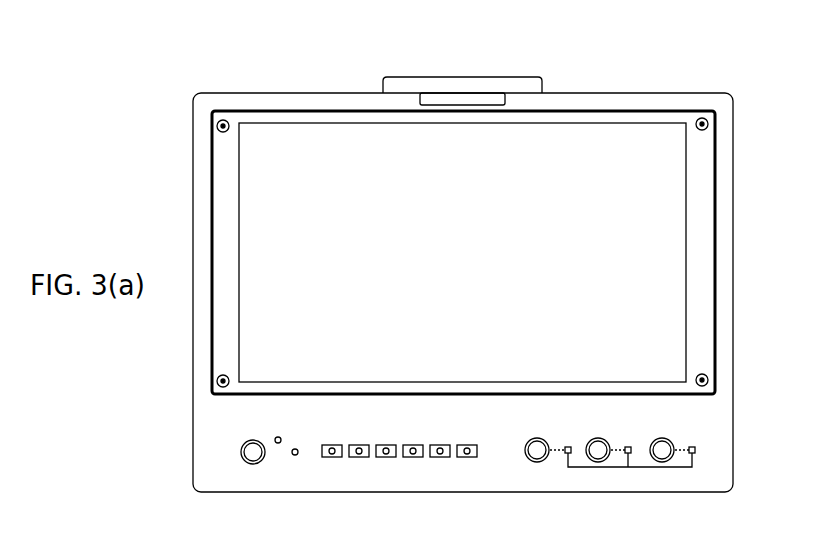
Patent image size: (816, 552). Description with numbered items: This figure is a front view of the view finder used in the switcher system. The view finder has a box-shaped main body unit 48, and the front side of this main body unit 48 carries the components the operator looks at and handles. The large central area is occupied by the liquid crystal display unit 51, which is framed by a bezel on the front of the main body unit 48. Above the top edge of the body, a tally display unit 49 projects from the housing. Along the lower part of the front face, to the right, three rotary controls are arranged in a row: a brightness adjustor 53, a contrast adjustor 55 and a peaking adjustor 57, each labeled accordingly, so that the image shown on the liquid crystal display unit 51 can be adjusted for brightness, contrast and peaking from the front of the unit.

The main body unit 48 is at (239, 96).
The tally display unit 49 is at (468, 97).
The liquid crystal display unit 51 is at (468, 258).
The brightness adjustor 53 is at (537, 462).
The contrast adjustor 55 is at (598, 462).
The peaking adjustor 57 is at (662, 462).